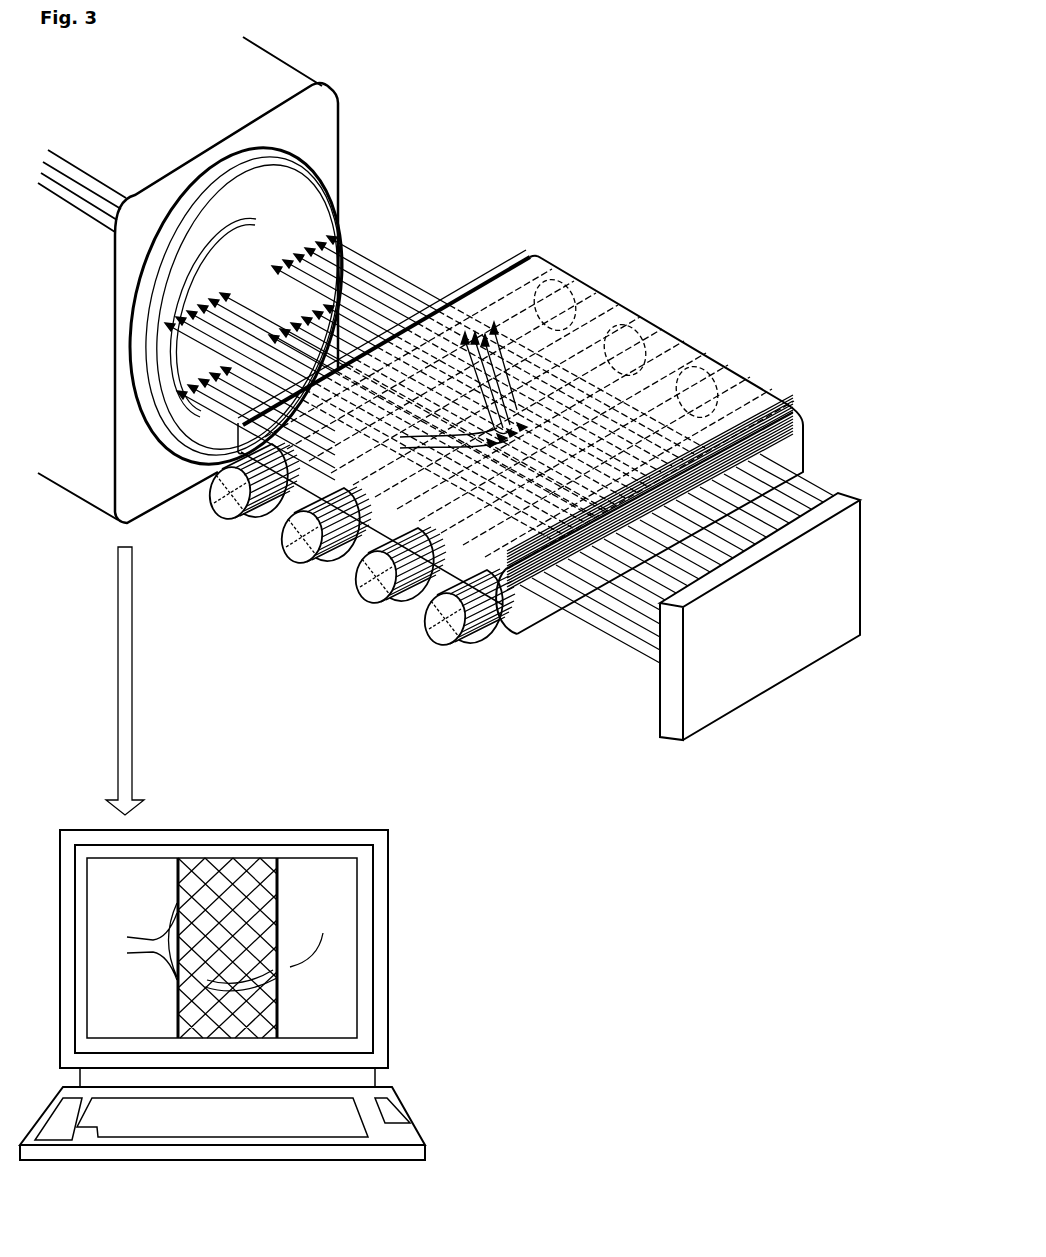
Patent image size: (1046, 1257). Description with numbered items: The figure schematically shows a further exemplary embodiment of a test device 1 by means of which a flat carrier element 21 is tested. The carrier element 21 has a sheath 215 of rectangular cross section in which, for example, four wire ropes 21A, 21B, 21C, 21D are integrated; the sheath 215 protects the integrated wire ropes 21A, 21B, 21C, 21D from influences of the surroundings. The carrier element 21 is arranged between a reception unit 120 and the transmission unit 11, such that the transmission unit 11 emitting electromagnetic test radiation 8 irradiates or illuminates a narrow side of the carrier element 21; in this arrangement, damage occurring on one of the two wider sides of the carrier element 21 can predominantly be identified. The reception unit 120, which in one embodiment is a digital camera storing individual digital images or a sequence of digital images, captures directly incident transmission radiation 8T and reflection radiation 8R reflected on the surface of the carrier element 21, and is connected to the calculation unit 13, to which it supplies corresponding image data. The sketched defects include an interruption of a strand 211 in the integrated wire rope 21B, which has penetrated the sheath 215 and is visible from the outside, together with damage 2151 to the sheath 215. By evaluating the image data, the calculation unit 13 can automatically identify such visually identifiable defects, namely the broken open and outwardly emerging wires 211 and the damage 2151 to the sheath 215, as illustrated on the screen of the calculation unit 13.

The test device 1 is at (625, 173).
The reception unit 120 is at (207, 280).
The transmission radiation 8T is at (393, 263).
The reflection radiation 8R is at (386, 416).
The carrier element 21 is at (740, 360).
The sheath 215 is at (667, 348).
The strand 211 is at (525, 385).
The wire rope 21A is at (222, 513).
The wire rope 21B is at (300, 558).
The wire rope 21C is at (368, 598).
The wire rope 21D is at (440, 647).
The electromagnetic test radiation 8 is at (598, 650).
The transmission unit 11 is at (700, 707).
The calculation unit 13 is at (88, 833).
The damage to the sheath 2151 is at (318, 937).